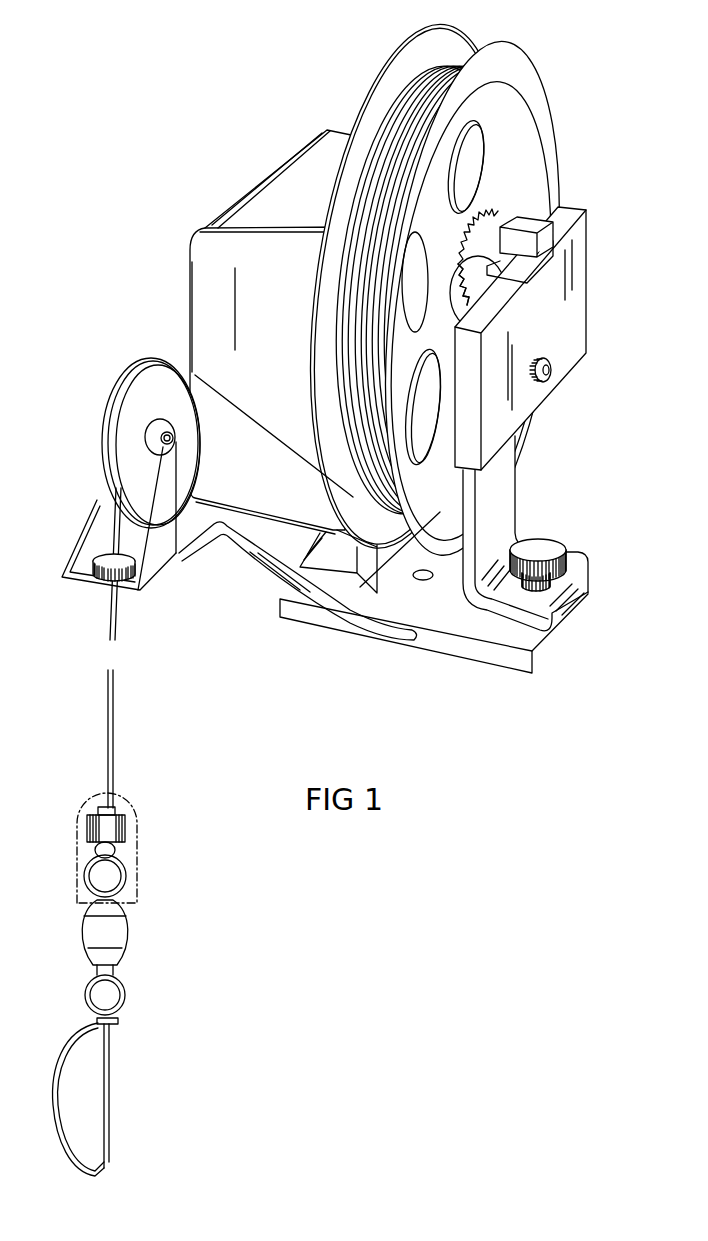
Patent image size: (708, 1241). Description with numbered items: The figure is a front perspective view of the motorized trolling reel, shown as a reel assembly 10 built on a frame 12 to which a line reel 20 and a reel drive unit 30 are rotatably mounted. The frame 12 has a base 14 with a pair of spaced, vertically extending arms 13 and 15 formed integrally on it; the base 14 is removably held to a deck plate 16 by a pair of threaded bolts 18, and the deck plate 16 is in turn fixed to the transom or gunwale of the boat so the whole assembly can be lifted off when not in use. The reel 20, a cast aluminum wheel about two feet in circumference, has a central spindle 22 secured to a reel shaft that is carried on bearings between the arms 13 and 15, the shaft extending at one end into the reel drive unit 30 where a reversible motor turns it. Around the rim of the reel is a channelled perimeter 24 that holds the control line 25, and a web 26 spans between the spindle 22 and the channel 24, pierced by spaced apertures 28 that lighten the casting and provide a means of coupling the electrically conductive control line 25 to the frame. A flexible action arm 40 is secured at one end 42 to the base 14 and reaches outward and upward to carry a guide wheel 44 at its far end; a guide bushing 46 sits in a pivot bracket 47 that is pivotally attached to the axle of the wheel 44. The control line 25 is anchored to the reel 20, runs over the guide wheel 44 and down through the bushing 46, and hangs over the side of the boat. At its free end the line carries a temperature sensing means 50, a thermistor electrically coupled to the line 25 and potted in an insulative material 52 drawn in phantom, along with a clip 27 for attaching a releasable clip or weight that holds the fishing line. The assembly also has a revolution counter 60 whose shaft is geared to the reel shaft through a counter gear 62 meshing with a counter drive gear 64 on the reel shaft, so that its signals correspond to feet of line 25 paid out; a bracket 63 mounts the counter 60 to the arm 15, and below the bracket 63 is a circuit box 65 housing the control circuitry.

The reel assembly 10 is at (167, 215).
The frame 12 is at (517, 488).
The arm 13 is at (357, 560).
The base 14 is at (587, 570).
The arm 15 is at (520, 460).
The deck plate 16 is at (556, 638).
The threaded bolts 18 is at (557, 547).
The line reel 20 is at (538, 52).
The central spindle 22 is at (466, 268).
The channelled perimeter 24 is at (462, 46).
The control line 25 is at (118, 708).
The web 26 is at (498, 172).
The clip 27 is at (130, 990).
The apertures 28 is at (467, 150).
The reel drive unit 30 is at (240, 199).
The flexible action arm 40 is at (228, 572).
The end of action arm 42 is at (423, 628).
The guide wheel 44 is at (117, 405).
The guide bushing 46 is at (95, 558).
The pivot bracket 47 is at (85, 525).
The temperature sensing means 50 is at (233, 405).
The insulative material 52 is at (138, 868).
The revolution counter 60 is at (528, 243).
The counter gear 62 is at (503, 215).
The bracket 63 is at (522, 266).
The counter drive gear 64 is at (467, 290).
The circuit box 65 is at (588, 328).